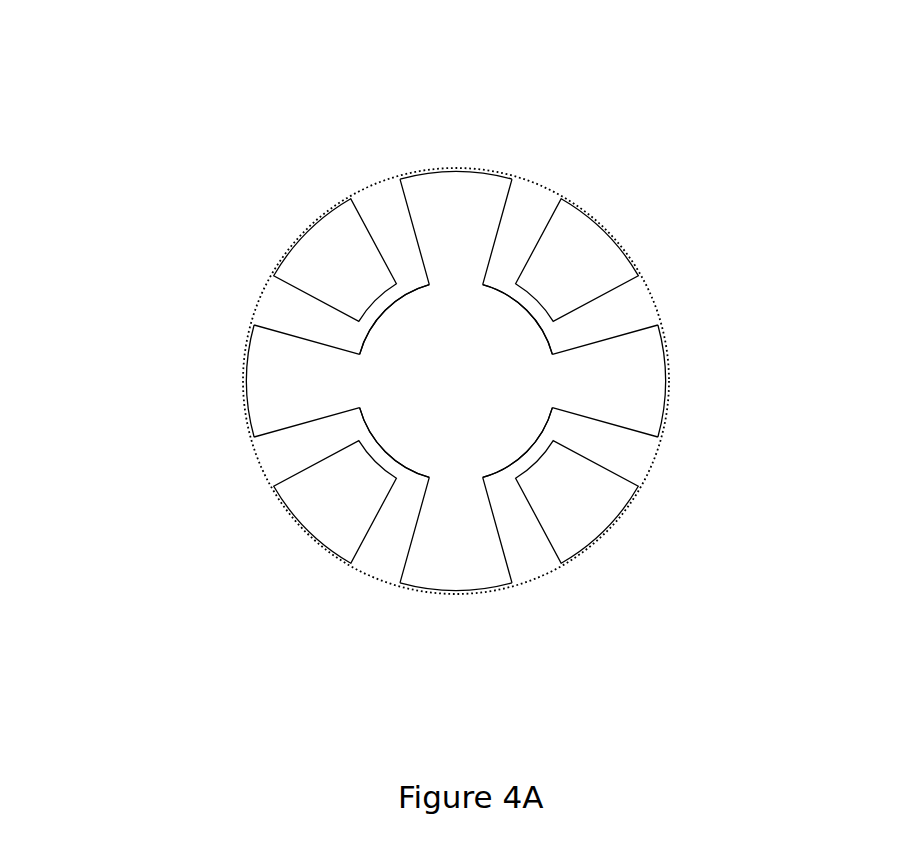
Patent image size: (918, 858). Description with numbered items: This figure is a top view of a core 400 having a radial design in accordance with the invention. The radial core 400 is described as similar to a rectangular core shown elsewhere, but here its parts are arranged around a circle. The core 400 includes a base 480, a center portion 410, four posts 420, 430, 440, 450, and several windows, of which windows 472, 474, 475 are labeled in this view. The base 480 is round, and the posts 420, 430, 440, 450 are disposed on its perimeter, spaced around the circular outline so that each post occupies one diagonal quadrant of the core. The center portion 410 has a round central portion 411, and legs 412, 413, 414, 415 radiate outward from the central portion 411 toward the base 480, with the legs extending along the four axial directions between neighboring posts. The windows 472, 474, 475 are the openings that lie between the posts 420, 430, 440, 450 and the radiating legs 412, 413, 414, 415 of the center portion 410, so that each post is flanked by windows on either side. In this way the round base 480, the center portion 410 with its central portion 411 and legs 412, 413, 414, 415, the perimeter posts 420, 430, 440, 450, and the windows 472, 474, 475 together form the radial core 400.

The core 400 is at (72, 392).
The center portion 410 is at (472, 373).
The round central portion 411 is at (448, 316).
The leg 412 is at (643, 407).
The leg 413 is at (457, 575).
The leg 414 is at (277, 392).
The leg 415 is at (468, 218).
The post 420 is at (595, 247).
The post 430 is at (573, 512).
The post 440 is at (307, 510).
The post 450 is at (327, 238).
The window 472 is at (637, 312).
The window 474 is at (633, 463).
The window 475 is at (277, 305).
The base 480 is at (530, 202).